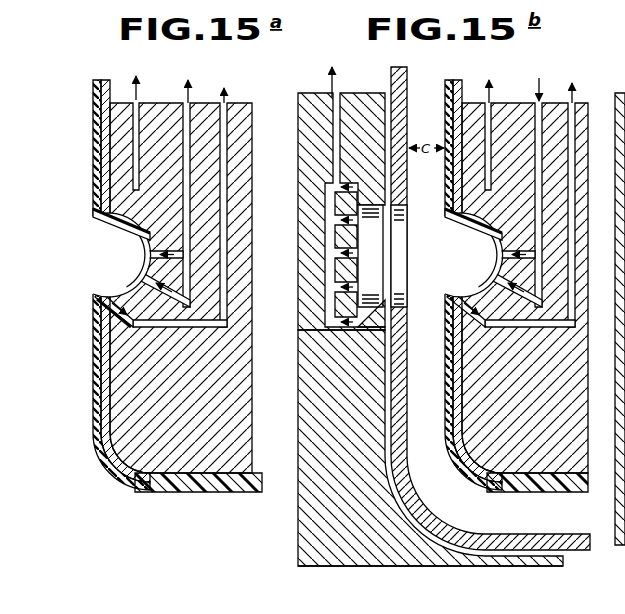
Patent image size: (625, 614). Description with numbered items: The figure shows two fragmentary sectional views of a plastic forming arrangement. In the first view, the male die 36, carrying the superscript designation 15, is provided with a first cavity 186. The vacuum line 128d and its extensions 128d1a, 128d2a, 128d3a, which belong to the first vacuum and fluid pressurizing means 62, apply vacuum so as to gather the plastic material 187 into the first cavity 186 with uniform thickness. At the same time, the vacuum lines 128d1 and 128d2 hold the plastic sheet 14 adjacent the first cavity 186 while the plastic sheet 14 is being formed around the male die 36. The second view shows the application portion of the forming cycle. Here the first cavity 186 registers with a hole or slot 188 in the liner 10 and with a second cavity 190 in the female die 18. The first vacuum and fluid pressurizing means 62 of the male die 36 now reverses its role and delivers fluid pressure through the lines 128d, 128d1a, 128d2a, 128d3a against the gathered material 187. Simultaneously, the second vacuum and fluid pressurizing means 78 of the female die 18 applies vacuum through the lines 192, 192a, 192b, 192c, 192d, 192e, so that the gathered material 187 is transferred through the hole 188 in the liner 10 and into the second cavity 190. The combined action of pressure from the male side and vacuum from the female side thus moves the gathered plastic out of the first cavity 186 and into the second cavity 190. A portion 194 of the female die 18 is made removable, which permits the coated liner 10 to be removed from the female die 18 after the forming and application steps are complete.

In FIG. 15A, the vacuum line 128d2 is at (136, 124).
In FIG. 15A, the vacuum line 128d is at (200, 104).
In FIG. 15B, the vacuum line 128d is at (557, 103).
In FIG. 15A, the first cavity 186 is at (108, 224).
In FIG. 15A, the extension of vacuum line 128d1a is at (110, 240).
In FIG. 15B, the extension of vacuum line 128d1a is at (479, 241).
In FIG. 15A, the extension of vacuum line 128d2a is at (128, 262).
In FIG. 15A, the extension of vacuum line 128d3a is at (106, 281).
In FIG. 15A, the plastic material 187 is at (95, 300).
In FIG. 15B, the plastic material 187 is at (458, 228).
In FIG. 15A, the vacuum line 128d1 is at (172, 328).
In FIG. 15B, the vacuum line 128d1 is at (520, 328).
In FIG. 15A, the male die 36 is at (139, 482).
In FIG. 15B, the male die 36 is at (531, 458).
In FIG. 15A, the superscript designation of die 15 is at (129, 295).
In FIG. 15B, the superscript designation of die 15 is at (430, 576).
In FIG. 15A, the plastic sheet 14 is at (200, 492).
In FIG. 15B, the plastic sheet 14 is at (576, 492).
In FIG. 15B, the removable portion 194 is at (358, 100).
In FIG. 15B, the vacuum line 192 is at (308, 126).
In FIG. 15B, the vacuum line 192a is at (355, 186).
In FIG. 15B, the vacuum line 192b is at (332, 220).
In FIG. 15B, the vacuum line 192c is at (332, 253).
In FIG. 15B, the vacuum line 192d is at (332, 288).
In FIG. 15B, the vacuum line 192e is at (332, 323).
In FIG. 15B, the hole or slot 188 is at (388, 218).
In FIG. 15B, the second cavity 190 is at (380, 305).
In FIG. 15B, the second vacuum and fluid pressurizing means 78 is at (481, 82).
In FIG. 15B, the first vacuum and fluid pressurizing means 62 is at (536, 80).
In FIG. 15B, the female die 18 is at (333, 552).
In FIG. 15B, the liner 10 is at (579, 550).